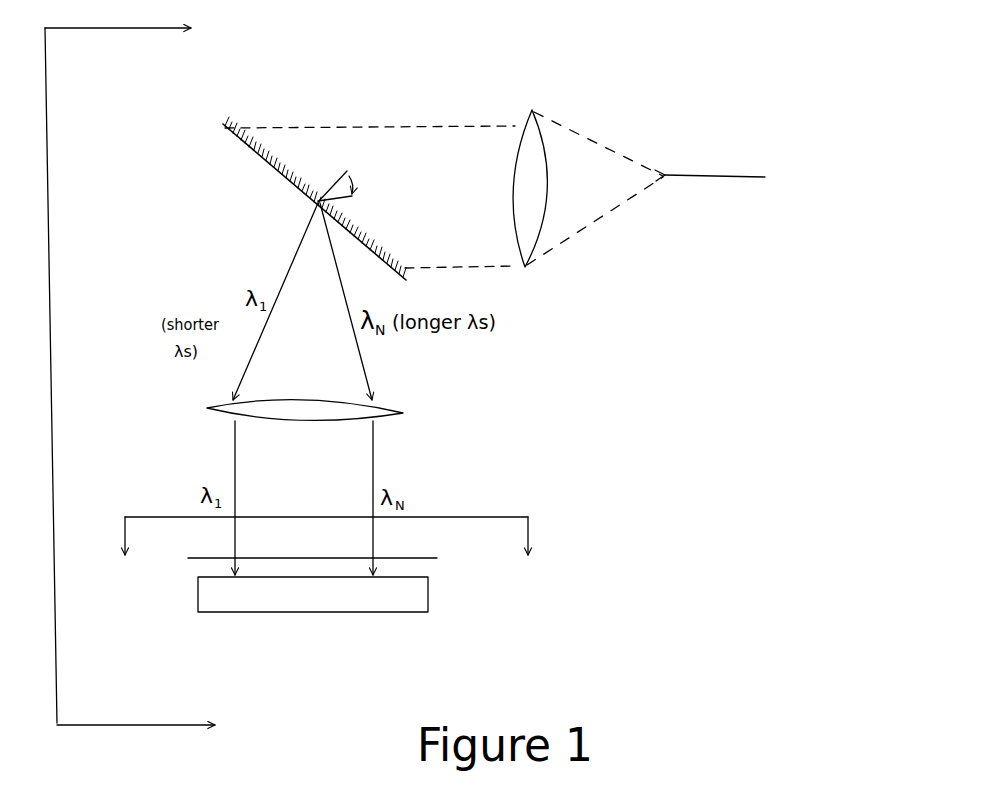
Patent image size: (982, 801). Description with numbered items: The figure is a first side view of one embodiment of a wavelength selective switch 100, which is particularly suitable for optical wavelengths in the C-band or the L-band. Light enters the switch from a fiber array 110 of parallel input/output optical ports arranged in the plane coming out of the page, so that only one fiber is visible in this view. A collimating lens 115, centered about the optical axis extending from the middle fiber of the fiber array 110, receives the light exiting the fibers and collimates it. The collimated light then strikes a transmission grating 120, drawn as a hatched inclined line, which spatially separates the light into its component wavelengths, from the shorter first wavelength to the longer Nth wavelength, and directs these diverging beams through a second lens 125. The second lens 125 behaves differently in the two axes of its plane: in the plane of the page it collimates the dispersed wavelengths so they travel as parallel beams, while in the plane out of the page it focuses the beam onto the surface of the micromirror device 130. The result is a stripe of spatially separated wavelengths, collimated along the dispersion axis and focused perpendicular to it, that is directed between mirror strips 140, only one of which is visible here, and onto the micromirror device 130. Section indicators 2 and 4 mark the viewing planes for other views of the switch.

The wavelength selective switch 100 is at (598, 413).
The fiber array 110 is at (707, 163).
The collimating lens 115 is at (525, 267).
The transmission grating 120 is at (223, 127).
The second lens 125 is at (214, 410).
The micromirror device 130 is at (205, 598).
The mirror strip 140 is at (437, 558).
The section line 2- 2 is at (329, 556).
The section line 4- 4 is at (146, 385).